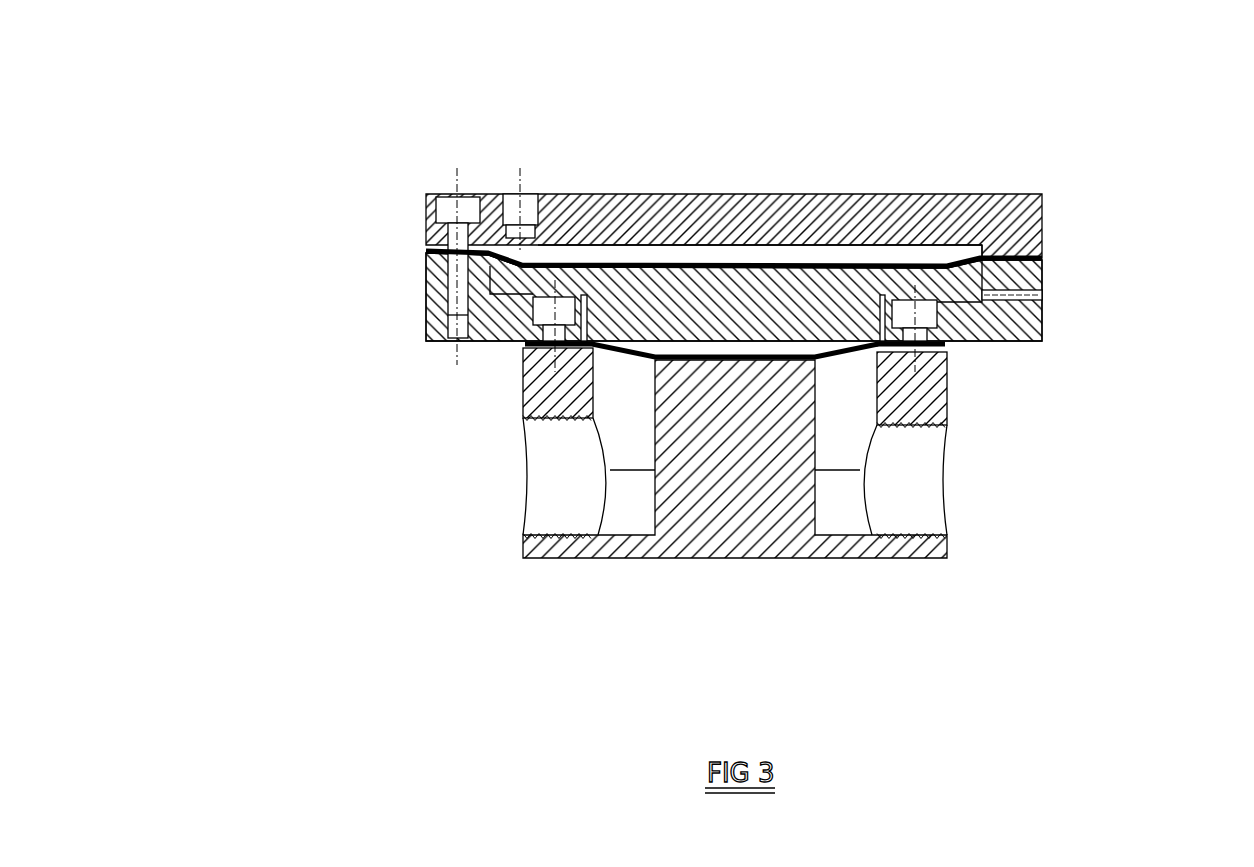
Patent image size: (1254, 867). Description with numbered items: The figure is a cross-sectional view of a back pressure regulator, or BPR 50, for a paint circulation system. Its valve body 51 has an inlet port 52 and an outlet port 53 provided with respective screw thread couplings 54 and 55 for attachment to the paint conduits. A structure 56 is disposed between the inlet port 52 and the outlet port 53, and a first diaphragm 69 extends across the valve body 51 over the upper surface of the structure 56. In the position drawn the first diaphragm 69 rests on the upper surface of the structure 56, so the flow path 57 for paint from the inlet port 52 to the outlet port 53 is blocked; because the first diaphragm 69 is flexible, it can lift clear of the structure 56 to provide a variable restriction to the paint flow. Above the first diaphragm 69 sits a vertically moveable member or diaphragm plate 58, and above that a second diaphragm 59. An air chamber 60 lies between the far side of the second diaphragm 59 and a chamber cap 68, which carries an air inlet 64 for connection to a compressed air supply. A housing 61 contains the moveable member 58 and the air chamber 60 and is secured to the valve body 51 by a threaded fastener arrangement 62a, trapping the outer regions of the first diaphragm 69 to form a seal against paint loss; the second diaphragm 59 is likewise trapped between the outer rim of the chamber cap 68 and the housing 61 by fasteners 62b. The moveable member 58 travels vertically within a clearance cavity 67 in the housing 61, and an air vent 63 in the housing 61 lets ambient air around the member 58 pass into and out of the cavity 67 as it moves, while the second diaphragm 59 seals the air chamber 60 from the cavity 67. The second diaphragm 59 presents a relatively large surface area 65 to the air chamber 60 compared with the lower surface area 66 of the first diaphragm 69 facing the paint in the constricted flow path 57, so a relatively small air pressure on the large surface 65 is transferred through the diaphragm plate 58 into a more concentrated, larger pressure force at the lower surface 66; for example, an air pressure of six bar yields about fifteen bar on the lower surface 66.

The BPR 50 is at (385, 162).
The valve body 51 is at (915, 392).
The inlet port 52 is at (560, 495).
The outlet port 53 is at (918, 480).
The screw thread coupling 54 is at (563, 542).
The screw thread coupling 55 is at (910, 538).
The structure 56 is at (730, 500).
The flow path 57 is at (623, 413).
The moveable member 58 is at (772, 313).
The second diaphragm 59 is at (962, 255).
The air chamber 60 is at (568, 248).
The housing 61 is at (1052, 324).
The threaded fastener arrangement 62a is at (540, 315).
The fasteners 62b is at (452, 213).
The air vent 63 is at (1052, 290).
The air inlet 64 is at (520, 243).
The surface area 65 is at (882, 263).
The lower surface area 66 is at (690, 340).
The clearance cavity 67 is at (497, 263).
The chamber cap 68 is at (715, 195).
The first diaphragm 69 is at (950, 350).